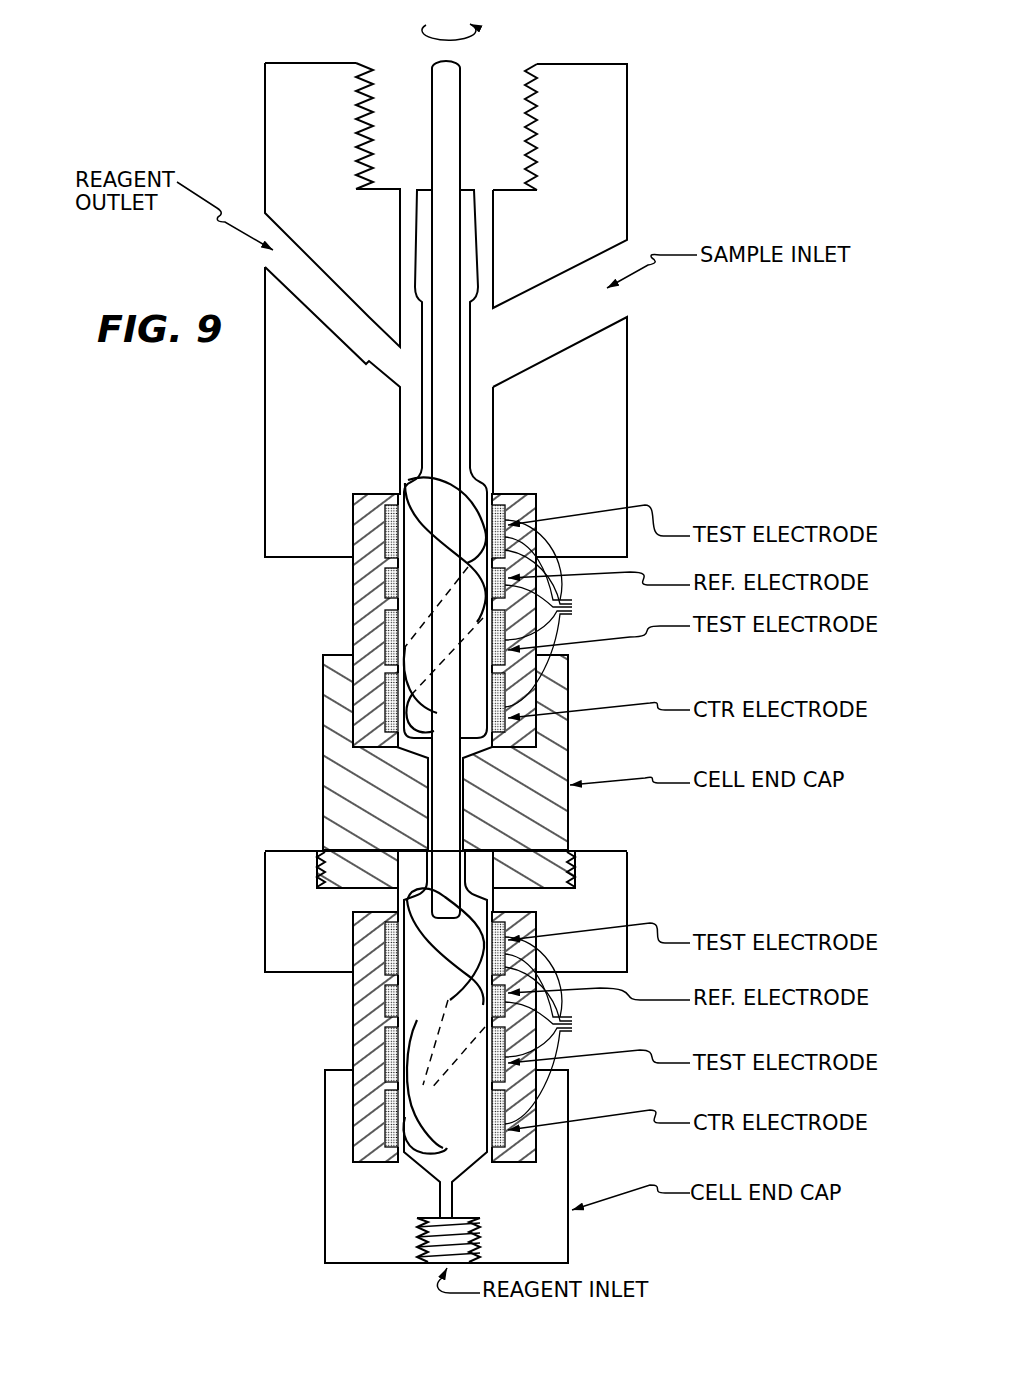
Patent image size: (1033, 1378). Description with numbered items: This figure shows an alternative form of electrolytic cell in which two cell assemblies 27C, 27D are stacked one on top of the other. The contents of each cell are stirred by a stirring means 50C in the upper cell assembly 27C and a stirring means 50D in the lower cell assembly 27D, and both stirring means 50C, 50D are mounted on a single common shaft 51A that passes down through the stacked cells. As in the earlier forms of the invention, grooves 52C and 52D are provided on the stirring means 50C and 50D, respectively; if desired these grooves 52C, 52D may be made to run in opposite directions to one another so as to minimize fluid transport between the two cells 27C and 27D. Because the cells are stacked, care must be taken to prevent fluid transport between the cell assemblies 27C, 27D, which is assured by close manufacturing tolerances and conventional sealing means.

The common shaft 51A is at (465, 96).
The groove 52C is at (427, 495).
The stirring means 50C is at (400, 558).
The cell assembly 27C is at (350, 617).
The stirring means 50D is at (400, 1020).
The cell assembly 27D is at (353, 1040).
The groove 52D is at (425, 1140).